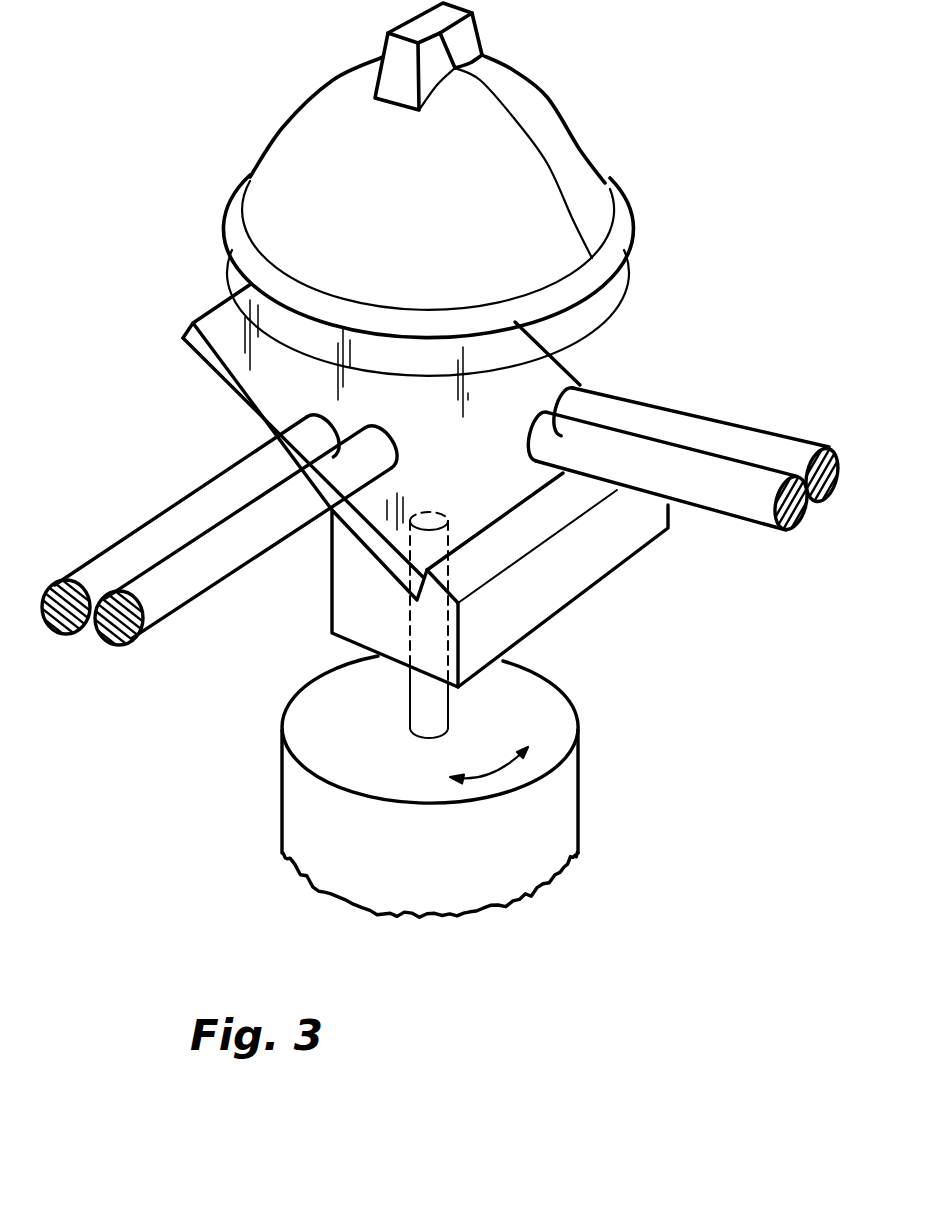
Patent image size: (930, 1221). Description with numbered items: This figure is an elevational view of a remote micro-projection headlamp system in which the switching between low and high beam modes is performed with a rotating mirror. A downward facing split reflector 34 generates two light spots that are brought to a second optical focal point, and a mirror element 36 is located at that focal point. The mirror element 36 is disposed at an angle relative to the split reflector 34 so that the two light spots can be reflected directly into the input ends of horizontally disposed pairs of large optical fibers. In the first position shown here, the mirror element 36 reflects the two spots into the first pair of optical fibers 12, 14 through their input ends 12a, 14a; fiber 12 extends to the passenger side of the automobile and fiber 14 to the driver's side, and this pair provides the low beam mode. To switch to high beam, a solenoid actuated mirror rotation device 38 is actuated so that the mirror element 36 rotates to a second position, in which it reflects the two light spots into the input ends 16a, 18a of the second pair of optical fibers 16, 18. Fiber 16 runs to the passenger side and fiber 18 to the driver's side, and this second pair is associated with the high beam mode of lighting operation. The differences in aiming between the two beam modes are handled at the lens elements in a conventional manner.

The first optical fiber of the first pair 12 is at (740, 508).
The input end of optical fiber 12 12a is at (532, 438).
The second optical fiber of the first pair 14 is at (756, 432).
The input end of optical fiber 14 14a is at (560, 402).
The first optical fiber of the second pair 16 is at (183, 605).
The input end of optical fiber 16 16a is at (396, 447).
The second optical fiber of the second pair 18 is at (85, 560).
The input end of optical fiber 18 18a is at (342, 418).
The split reflector 34 is at (553, 110).
The mirror element 36 is at (200, 320).
The solenoid actuated mirror rotation device 38 is at (553, 710).